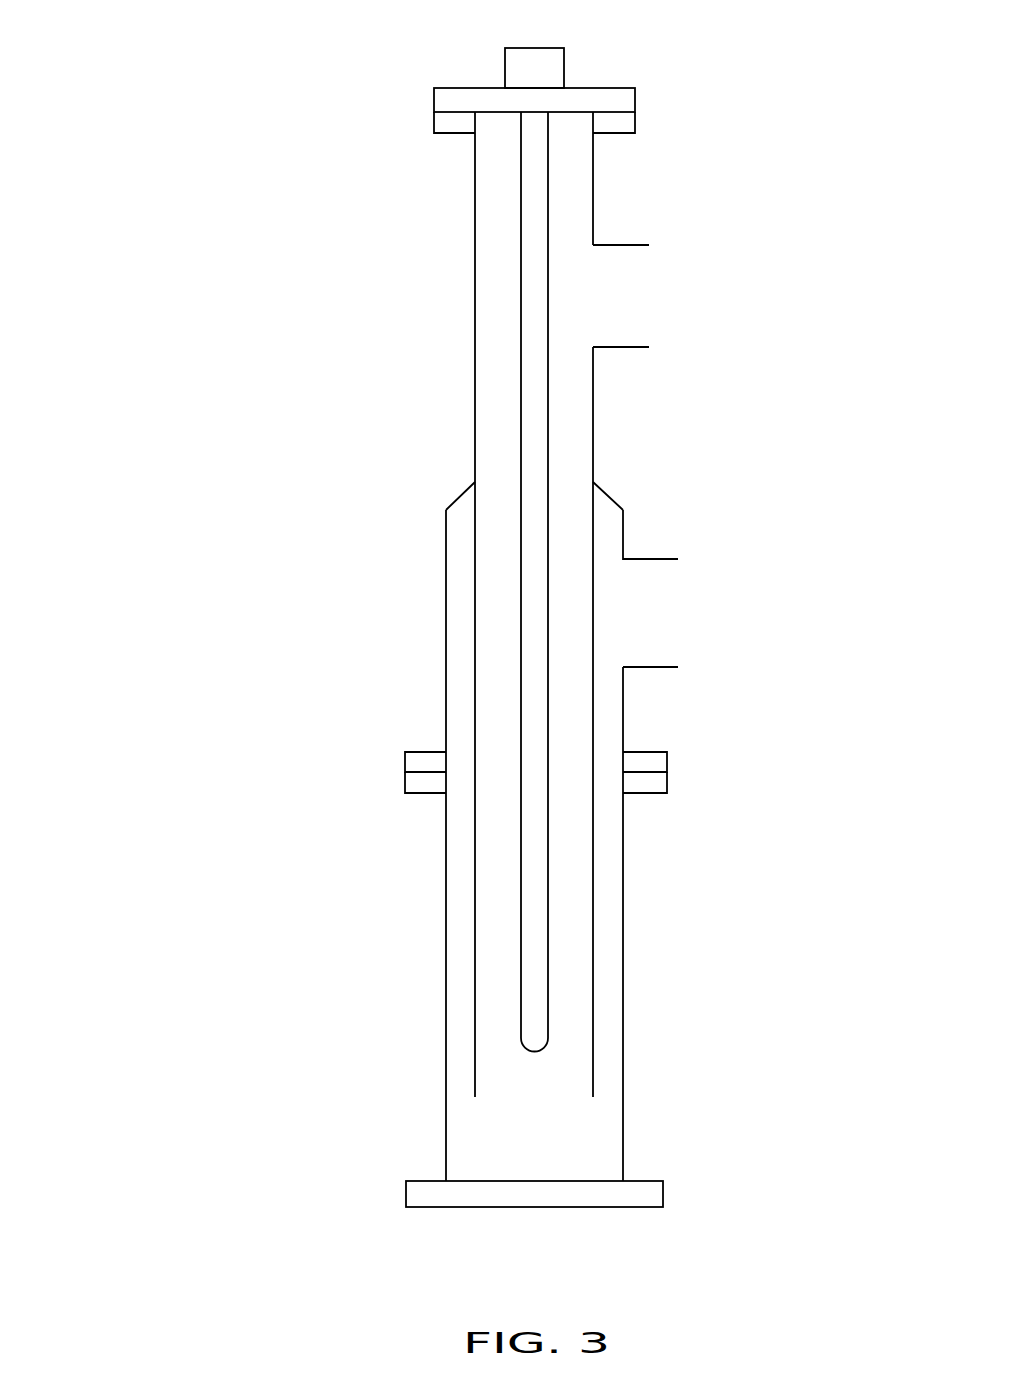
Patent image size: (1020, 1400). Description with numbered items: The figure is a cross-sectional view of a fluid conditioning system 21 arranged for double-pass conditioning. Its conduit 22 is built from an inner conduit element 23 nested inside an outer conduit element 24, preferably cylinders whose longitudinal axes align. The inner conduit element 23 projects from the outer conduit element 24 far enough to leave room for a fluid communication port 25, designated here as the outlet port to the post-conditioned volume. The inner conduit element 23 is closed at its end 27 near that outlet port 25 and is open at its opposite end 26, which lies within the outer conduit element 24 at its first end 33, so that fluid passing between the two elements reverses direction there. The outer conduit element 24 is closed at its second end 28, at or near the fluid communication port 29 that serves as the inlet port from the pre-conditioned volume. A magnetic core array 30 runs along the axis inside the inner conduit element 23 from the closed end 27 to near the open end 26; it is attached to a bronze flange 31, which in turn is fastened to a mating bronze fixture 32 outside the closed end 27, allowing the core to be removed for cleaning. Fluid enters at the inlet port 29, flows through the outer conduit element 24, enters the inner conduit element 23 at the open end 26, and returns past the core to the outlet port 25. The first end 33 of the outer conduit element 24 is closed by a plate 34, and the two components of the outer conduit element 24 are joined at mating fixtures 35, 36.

The conditioning system 21 is at (282, 168).
The conduit 22 is at (475, 420).
The inner conduit element 23 is at (583, 897).
The outer conduit element 24 is at (608, 975).
The fluid communication port 25 is at (635, 293).
The open end 26 is at (542, 1098).
The closed end 27 is at (488, 115).
The second end 28 is at (452, 505).
The fluid communication port 29 is at (680, 632).
The magnetic core array 30 is at (536, 650).
The bronze flange 31 is at (550, 70).
The mating bronze fixture 32 is at (628, 125).
The first end 33 is at (459, 1142).
The plate 34 is at (653, 1197).
The mating fixture 35 is at (415, 760).
The mating fixture 36 is at (412, 795).